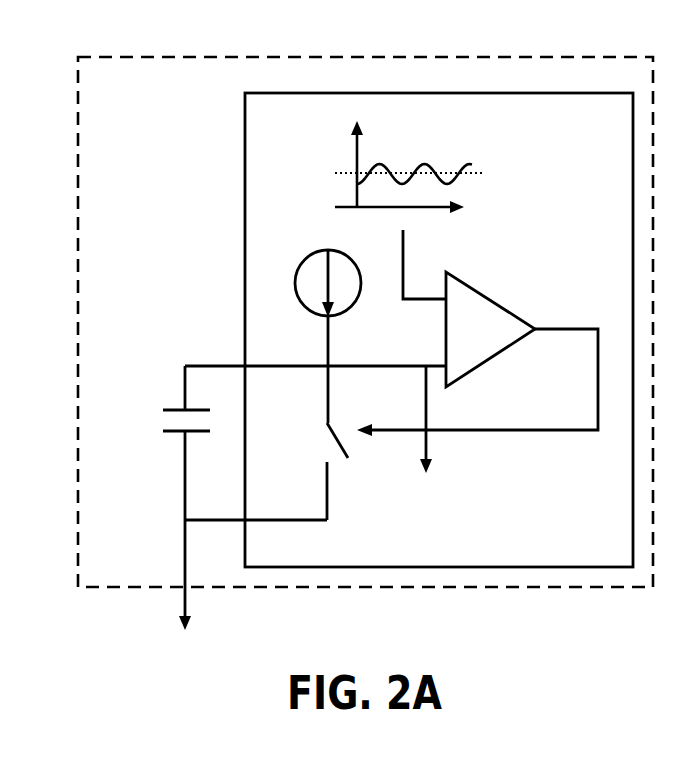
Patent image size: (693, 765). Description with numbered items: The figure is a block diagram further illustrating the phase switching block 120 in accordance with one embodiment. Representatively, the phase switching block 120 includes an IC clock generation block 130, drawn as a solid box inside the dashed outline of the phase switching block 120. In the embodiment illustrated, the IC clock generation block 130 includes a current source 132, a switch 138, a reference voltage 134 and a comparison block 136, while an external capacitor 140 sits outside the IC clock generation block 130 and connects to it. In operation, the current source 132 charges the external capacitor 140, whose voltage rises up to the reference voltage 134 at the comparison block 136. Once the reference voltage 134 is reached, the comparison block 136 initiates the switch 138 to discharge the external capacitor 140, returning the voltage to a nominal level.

The phase switching block 120 is at (123, 216).
The IC clock generation block 130 is at (524, 554).
The current source 132 is at (331, 245).
The reference voltage 134 is at (474, 186).
The comparison block 136 is at (500, 341).
The switch 138 is at (333, 413).
The external capacitor 140 is at (168, 405).